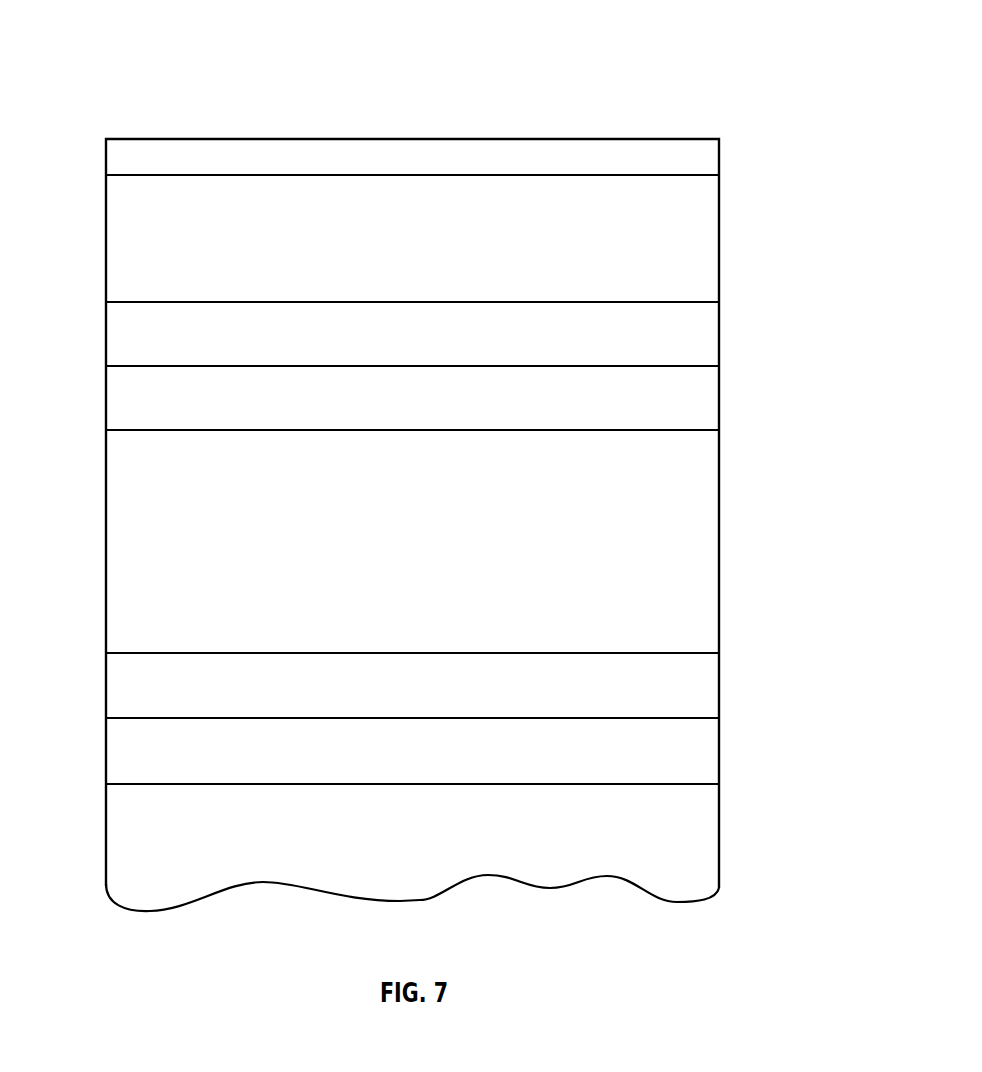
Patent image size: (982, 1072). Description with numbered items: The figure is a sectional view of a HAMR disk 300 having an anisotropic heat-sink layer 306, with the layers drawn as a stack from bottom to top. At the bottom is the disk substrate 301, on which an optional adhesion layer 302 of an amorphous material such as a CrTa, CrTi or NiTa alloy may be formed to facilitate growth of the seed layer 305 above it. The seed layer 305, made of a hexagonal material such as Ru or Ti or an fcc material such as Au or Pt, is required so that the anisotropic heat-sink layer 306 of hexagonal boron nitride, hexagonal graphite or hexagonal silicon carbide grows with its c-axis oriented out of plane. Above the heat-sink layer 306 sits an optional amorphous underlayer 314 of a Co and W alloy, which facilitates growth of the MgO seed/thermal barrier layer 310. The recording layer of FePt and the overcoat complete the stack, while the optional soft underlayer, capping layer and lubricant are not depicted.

The HAMR disk 300 is at (693, 76).
The seed/thermal barrier layer 310 is at (106, 337).
The amorphous underlayer 314 is at (106, 401).
The anisotropic heat-sink layer 306 is at (106, 489).
The seed layer 305 is at (106, 687).
The adhesion layer 302 is at (106, 750).
The disk substrate 301 is at (106, 838).